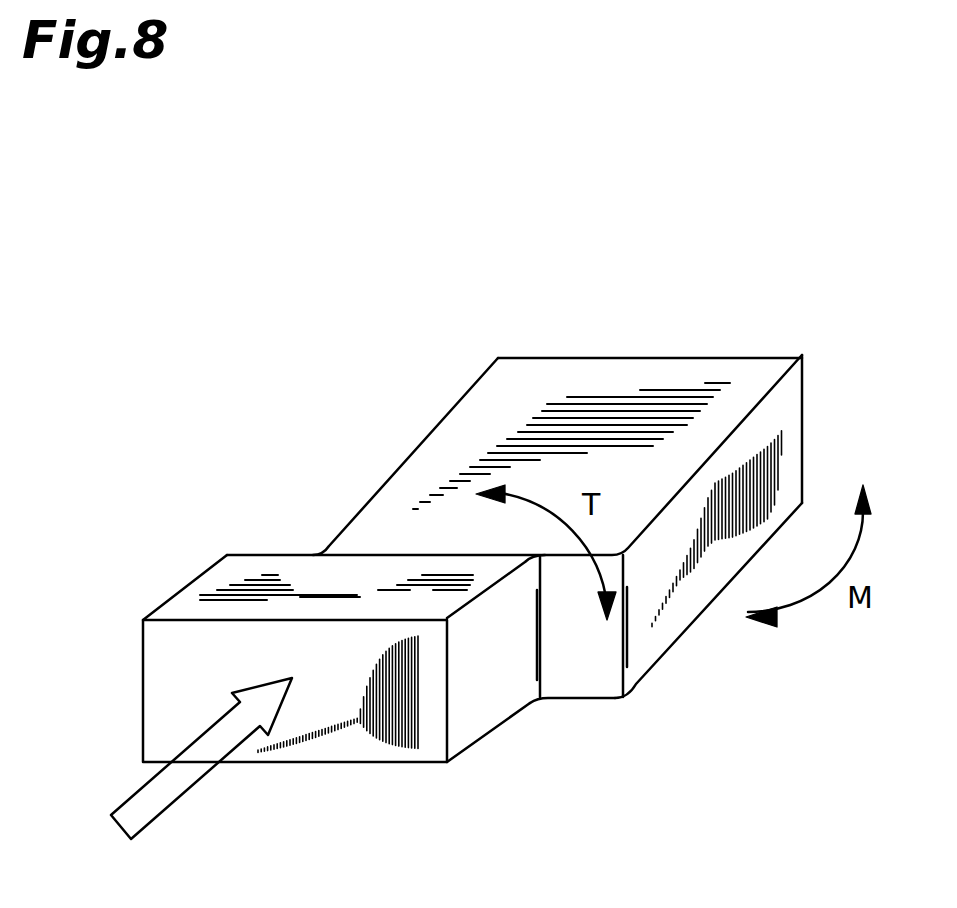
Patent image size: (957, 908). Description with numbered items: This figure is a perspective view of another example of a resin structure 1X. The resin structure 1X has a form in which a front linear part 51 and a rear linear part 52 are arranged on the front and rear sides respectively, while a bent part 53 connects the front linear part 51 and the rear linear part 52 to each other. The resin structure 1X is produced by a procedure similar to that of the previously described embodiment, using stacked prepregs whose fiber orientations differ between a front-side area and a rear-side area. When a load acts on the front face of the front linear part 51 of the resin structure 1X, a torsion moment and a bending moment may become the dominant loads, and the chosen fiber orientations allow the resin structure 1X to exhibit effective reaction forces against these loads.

The resin structure 1X is at (423, 465).
The front linear part 51 is at (483, 710).
The rear linear part 52 is at (572, 672).
The bent part 53 is at (660, 630).